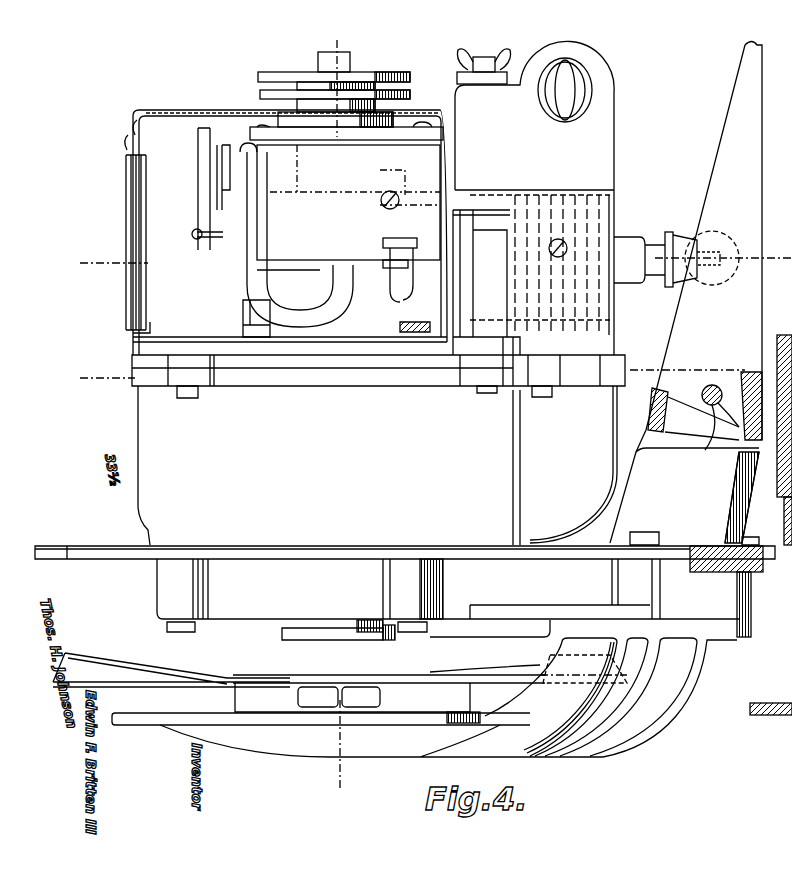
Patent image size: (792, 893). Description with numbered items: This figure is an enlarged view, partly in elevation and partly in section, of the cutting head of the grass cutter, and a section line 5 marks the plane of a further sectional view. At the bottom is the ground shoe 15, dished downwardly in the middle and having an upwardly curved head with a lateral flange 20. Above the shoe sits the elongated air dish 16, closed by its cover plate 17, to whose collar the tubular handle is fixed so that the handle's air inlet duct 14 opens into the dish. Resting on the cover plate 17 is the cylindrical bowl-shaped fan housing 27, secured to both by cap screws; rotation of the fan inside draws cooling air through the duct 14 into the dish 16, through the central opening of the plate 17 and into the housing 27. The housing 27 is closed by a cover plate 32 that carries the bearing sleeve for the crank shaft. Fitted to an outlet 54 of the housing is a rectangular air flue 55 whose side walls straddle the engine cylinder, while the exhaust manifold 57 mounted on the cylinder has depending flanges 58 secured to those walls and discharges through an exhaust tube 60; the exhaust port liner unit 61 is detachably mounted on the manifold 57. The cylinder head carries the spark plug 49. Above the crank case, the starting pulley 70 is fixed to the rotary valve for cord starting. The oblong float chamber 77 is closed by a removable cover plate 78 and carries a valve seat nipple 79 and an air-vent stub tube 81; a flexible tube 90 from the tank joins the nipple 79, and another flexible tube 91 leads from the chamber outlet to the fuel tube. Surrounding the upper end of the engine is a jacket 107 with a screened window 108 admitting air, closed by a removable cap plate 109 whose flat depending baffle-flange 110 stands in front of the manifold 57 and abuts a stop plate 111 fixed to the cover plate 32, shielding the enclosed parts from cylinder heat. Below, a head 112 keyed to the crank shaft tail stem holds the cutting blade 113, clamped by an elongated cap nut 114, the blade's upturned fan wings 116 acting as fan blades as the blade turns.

The section line 5- 5 is at (350, 48).
The air inlet duct 14 is at (97, 278).
The ground shoe 15 is at (100, 392).
The air dish 16 is at (47, 545).
The cover plate 17 is at (372, 546).
The lateral flange 20 is at (742, 640).
The fan housing 27 is at (254, 475).
The cover plate 32 is at (345, 362).
The spark plug 49 is at (627, 245).
The housing 54 is at (558, 475).
The air flue 55 is at (608, 318).
The exhaust manifold 57 is at (605, 140).
The depending flanges 58 is at (608, 208).
The exhaust tube 60 is at (575, 97).
The exhaust port liner unit 61 is at (458, 76).
The starting pulley 70 is at (388, 76).
The float chamber 77 is at (312, 260).
The cover plate 78 is at (410, 135).
The valve seat nipple 79 is at (385, 240).
The air-vent stub tube 81 is at (348, 207).
The flexible tube 90 is at (250, 262).
The flexible tube 91 is at (248, 295).
The jacket 107 is at (160, 318).
The screened window 108 is at (128, 195).
The cap plate 109 is at (222, 110).
The baffle-flange 110 is at (440, 170).
The stop plate 111 is at (410, 318).
The head 112 is at (300, 655).
The cutting blade 113 is at (425, 683).
The cap nut 114 is at (375, 705).
The fan wings 116 is at (108, 658).